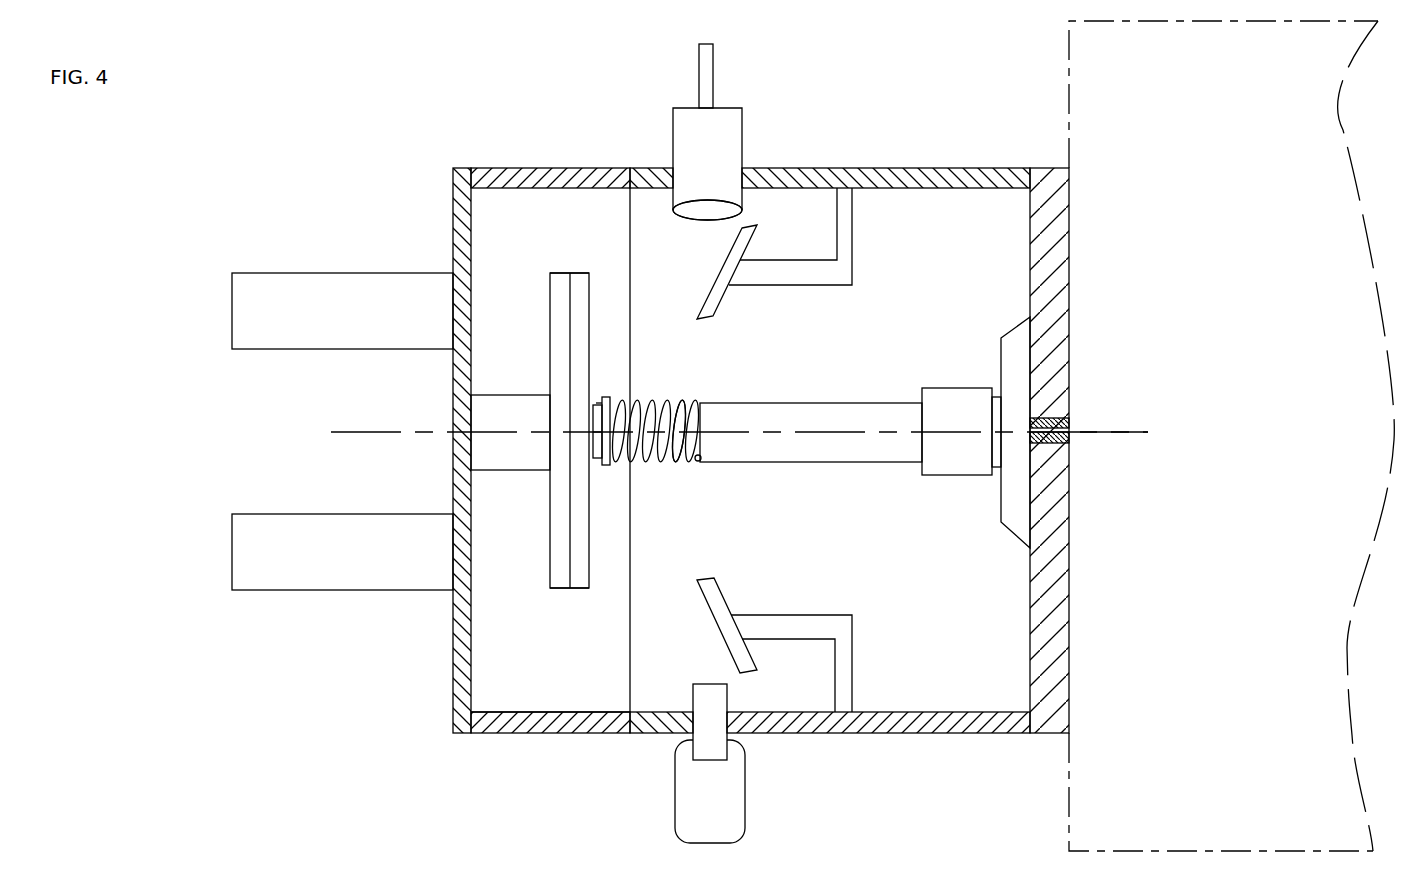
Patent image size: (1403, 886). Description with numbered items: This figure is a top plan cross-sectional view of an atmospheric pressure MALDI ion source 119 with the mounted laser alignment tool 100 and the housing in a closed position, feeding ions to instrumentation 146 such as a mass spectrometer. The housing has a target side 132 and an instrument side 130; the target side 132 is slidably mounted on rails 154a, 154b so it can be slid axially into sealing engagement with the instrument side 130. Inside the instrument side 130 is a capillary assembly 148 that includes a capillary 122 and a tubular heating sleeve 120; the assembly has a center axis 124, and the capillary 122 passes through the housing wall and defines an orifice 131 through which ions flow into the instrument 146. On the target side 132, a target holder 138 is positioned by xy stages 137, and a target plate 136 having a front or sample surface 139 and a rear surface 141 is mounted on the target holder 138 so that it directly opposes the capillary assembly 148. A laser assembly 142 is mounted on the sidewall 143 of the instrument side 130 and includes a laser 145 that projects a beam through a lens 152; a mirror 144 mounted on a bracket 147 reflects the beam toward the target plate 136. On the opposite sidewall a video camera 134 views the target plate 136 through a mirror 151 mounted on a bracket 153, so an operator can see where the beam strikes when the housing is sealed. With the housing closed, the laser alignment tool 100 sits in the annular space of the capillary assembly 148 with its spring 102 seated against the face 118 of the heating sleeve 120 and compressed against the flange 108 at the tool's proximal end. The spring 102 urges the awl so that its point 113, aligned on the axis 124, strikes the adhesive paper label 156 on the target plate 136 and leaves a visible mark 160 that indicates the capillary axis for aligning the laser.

The laser alignment tool 100 is at (673, 462).
The spring 102 is at (680, 403).
The flange 108 is at (607, 465).
The point 113 is at (596, 432).
The face 118 is at (700, 459).
The ion source 119 is at (488, 168).
The heating sleeve 120 is at (750, 403).
The capillary 122 is at (1048, 418).
The center axis 124 is at (1130, 432).
The instrument side 130 is at (875, 733).
The orifice 131 is at (1070, 432).
The target side 132 is at (493, 733).
The video camera 134 is at (745, 790).
The target plate 136 is at (582, 273).
The xy stages 137 is at (515, 395).
The target holder 138 is at (562, 590).
The sample surface 139 is at (568, 510).
The rear surface 141 is at (590, 572).
The laser assembly 142 is at (730, 108).
The sidewall 143 is at (960, 168).
The mirror 144 is at (752, 225).
The laser 145 is at (700, 62).
The instrumentation 146 is at (1069, 808).
The bracket 147 is at (852, 246).
The capillary assembly 148 is at (805, 462).
The mirror 151 is at (722, 595).
The lens 152 is at (672, 208).
The bracket 153 is at (853, 638).
The rail 154a is at (288, 350).
The rail 154b is at (285, 590).
The adhesive paper label 156 is at (595, 403).
The mark 160 is at (597, 431).